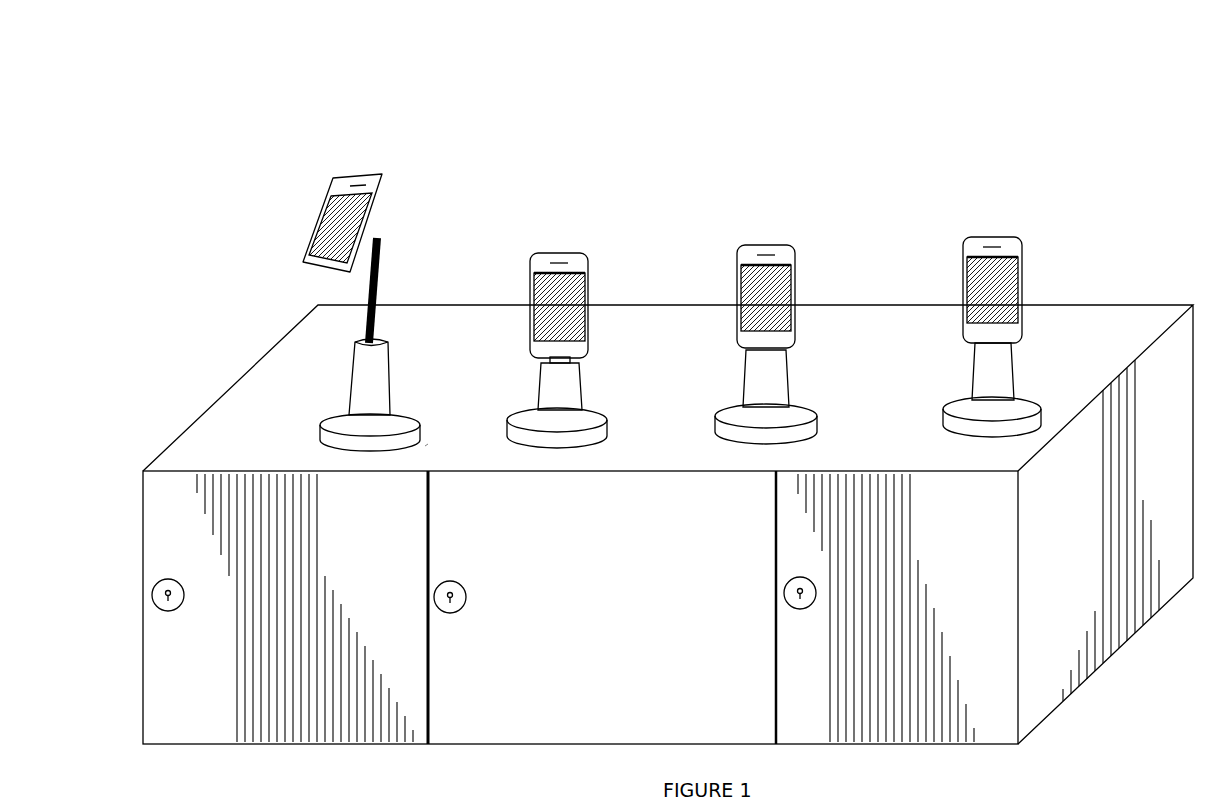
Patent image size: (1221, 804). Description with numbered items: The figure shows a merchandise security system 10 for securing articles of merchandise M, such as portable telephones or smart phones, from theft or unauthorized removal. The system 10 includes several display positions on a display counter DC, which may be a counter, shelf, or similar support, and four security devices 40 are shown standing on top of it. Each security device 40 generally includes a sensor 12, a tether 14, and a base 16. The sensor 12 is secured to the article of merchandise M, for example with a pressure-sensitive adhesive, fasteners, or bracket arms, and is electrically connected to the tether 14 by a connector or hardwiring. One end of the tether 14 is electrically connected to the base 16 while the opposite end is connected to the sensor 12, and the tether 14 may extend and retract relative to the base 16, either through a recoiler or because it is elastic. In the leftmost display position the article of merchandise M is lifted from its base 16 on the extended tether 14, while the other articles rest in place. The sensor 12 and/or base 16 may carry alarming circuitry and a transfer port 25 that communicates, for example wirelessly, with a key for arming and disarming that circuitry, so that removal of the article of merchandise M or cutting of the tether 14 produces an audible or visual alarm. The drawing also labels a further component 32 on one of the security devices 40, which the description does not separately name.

The merchandise security system 10 is at (1020, 93).
The sensor 12 is at (378, 232).
The tether 14 is at (380, 293).
The base 16 is at (343, 405).
The transfer port 25 is at (557, 420).
The clamp 32 is at (566, 360).
The security device 40 is at (423, 443).
The article of merchandise M is at (317, 213).
The display counter DC is at (668, 524).